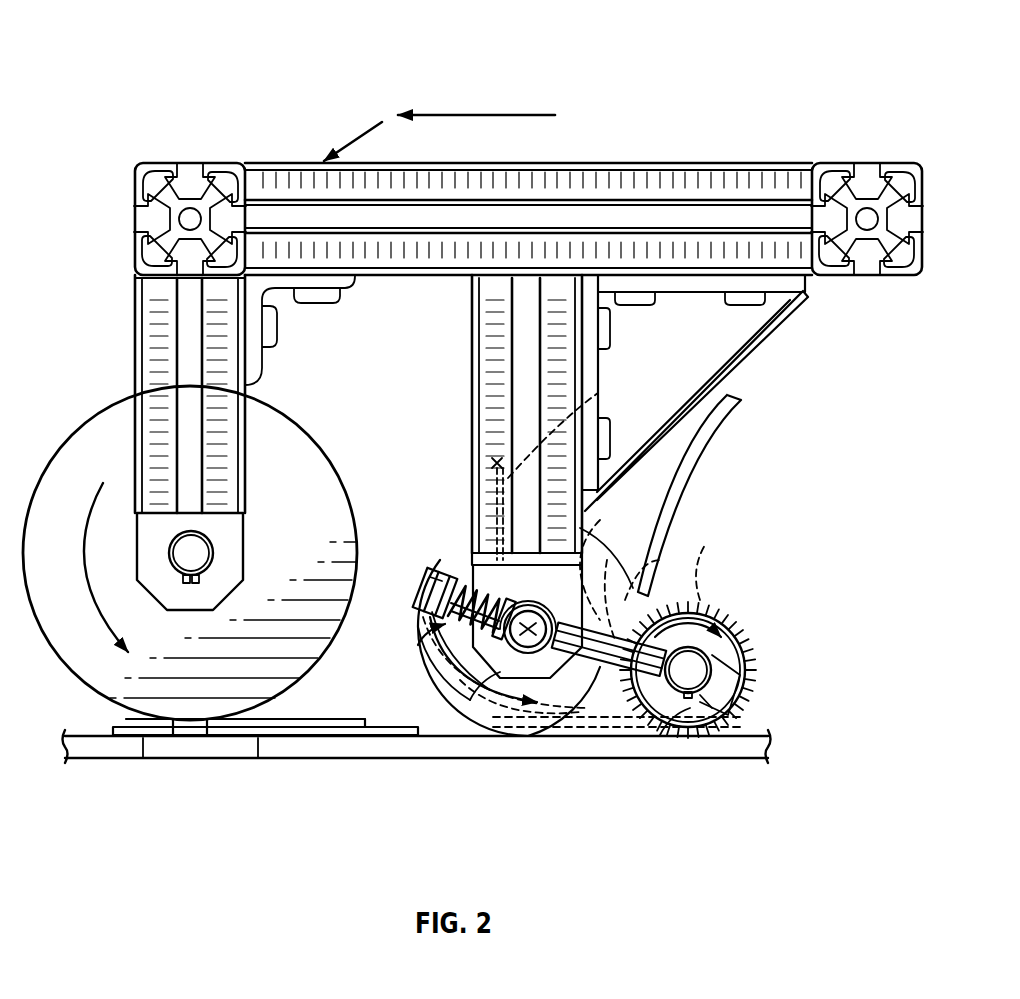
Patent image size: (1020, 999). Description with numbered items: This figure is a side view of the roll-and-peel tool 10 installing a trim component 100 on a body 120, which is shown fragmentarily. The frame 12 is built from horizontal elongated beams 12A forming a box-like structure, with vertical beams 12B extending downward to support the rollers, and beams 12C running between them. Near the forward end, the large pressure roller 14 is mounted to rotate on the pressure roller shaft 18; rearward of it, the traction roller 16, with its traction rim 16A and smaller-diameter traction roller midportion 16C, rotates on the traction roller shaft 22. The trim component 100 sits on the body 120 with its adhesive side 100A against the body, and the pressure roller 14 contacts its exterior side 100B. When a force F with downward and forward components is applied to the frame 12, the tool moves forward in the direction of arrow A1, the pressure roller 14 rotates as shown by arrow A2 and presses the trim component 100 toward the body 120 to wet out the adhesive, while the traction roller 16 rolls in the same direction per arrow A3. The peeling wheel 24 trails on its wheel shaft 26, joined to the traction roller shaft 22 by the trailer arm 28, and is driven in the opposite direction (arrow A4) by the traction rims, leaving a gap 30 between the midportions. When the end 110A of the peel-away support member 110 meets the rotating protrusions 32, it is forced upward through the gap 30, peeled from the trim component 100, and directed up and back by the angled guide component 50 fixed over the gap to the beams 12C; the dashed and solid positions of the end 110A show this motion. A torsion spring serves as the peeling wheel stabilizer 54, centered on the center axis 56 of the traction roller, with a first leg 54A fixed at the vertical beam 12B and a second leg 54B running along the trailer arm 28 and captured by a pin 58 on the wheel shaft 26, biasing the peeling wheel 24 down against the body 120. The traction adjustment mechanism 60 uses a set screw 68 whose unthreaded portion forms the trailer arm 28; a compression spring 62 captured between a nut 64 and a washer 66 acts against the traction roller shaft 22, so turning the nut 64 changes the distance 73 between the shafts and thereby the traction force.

The roll-and-peel tool 10 is at (92, 47).
The frame 12 is at (466, 334).
The elongated beams 12A is at (645, 185).
The elongated beams 12B is at (160, 285).
The beams 12C is at (788, 302).
The pressure roller 14 is at (84, 447).
The traction roller 16 is at (480, 562).
The traction rim 16A is at (645, 532).
The traction roller midportion 16C is at (426, 604).
The pressure roller shaft 18 is at (208, 553).
The traction roller shaft 22 is at (535, 608).
The peeling wheel 24 is at (742, 608).
The wheel shaft 26 is at (705, 664).
The trailer arm 28 is at (585, 620).
The gap 30 is at (647, 603).
The protrusions 32 is at (712, 608).
The guide component 50 is at (778, 330).
The peeling wheel stabilizer 54 is at (462, 632).
The first leg 54A is at (598, 393).
The second leg 54B is at (597, 690).
The center axis 56 is at (500, 590).
The pin 58 is at (660, 700).
The traction adjustment mechanism 60 is at (420, 598).
The compression spring 62 is at (456, 592).
The nut 64 is at (428, 582).
The washer 66 is at (512, 608).
The set screw 68 is at (735, 725).
The distance 73 is at (503, 666).
The trim component 100 is at (150, 724).
The adhesive side 100A is at (143, 738).
The exterior side 100B is at (352, 720).
The peel-away support member 110 is at (705, 425).
The end 110A is at (726, 398).
The body 120 is at (107, 748).
The force F is at (355, 135).
The arrow A1 is at (473, 114).
The arrow A2 is at (70, 657).
The arrow A3 is at (428, 645).
The arrow A4 is at (690, 592).